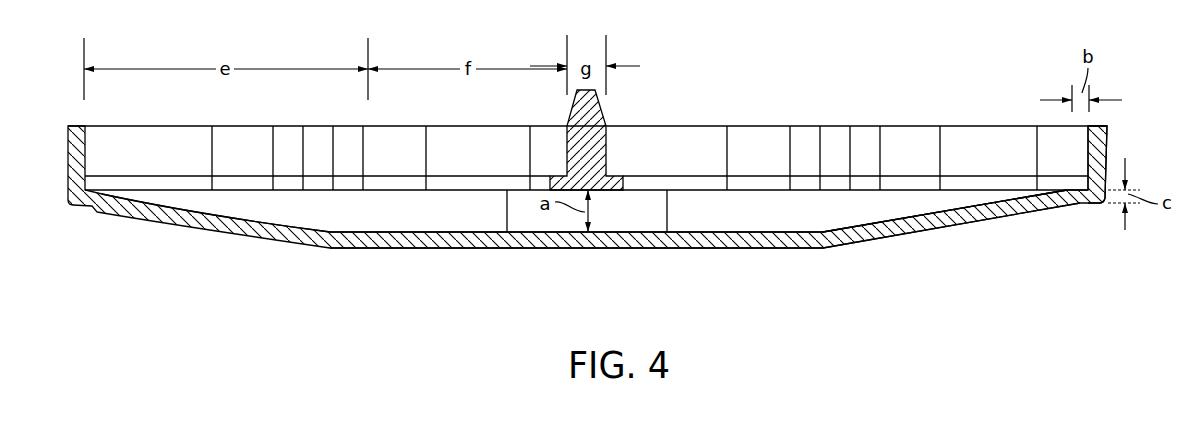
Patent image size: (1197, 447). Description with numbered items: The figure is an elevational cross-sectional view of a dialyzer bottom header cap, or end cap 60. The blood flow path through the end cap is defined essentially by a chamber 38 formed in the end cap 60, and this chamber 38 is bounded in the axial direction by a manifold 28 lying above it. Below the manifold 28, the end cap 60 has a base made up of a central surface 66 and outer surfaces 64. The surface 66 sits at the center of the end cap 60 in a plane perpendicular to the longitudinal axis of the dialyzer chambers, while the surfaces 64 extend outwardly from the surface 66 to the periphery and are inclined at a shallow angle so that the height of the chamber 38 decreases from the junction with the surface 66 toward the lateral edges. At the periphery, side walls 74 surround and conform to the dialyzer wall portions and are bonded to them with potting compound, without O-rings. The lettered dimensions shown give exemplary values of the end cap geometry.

The manifold 28 is at (185, 190).
The end cap 60 is at (320, 243).
The inclined surfaces 64 is at (250, 216).
The central surface 66 is at (695, 236).
The chamber 38 is at (899, 214).
The side walls 74 is at (1108, 141).